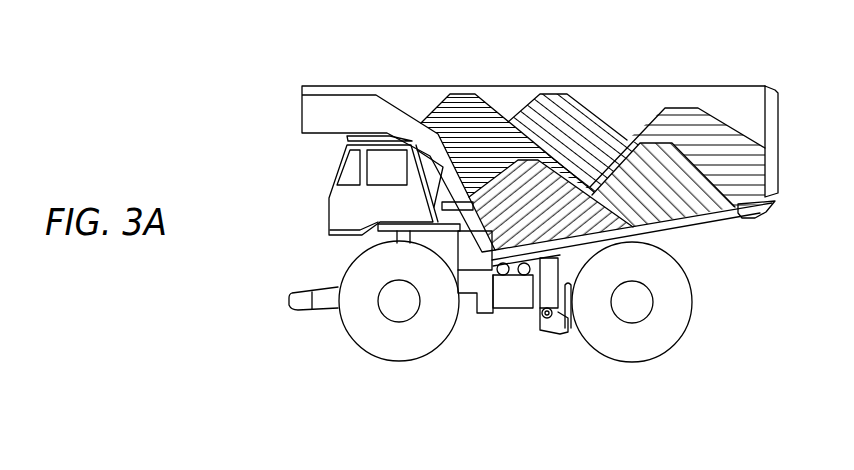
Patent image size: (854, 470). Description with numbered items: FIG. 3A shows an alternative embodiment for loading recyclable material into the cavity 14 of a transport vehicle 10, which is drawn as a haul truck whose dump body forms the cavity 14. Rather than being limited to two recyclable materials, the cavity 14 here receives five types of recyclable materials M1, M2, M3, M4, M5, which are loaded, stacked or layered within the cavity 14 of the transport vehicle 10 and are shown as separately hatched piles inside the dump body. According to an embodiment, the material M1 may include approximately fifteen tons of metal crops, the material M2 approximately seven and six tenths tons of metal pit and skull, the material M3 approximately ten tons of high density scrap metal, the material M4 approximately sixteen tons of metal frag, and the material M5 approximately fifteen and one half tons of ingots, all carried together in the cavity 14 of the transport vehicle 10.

The transport vehicle 10 is at (250, 59).
The cavity 14 is at (597, 102).
The recyclable material M1 is at (530, 227).
The recyclable material M2 is at (683, 205).
The recyclable material M3 is at (461, 104).
The recyclable material M4 is at (695, 112).
The recyclable material M5 is at (558, 103).